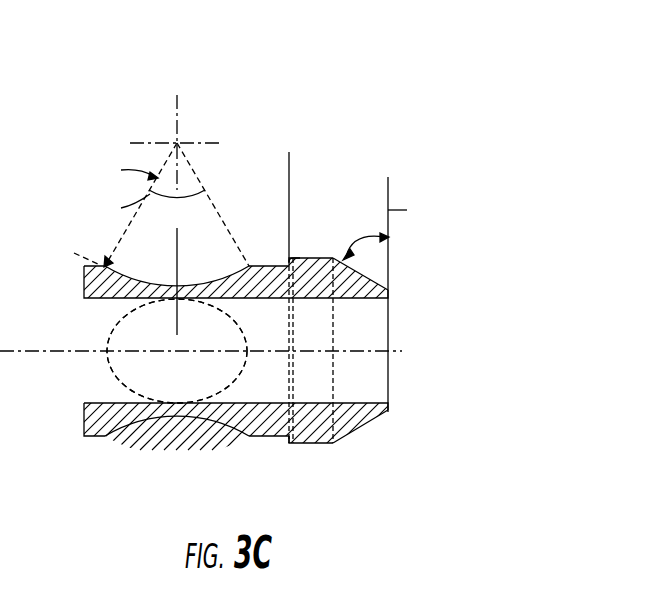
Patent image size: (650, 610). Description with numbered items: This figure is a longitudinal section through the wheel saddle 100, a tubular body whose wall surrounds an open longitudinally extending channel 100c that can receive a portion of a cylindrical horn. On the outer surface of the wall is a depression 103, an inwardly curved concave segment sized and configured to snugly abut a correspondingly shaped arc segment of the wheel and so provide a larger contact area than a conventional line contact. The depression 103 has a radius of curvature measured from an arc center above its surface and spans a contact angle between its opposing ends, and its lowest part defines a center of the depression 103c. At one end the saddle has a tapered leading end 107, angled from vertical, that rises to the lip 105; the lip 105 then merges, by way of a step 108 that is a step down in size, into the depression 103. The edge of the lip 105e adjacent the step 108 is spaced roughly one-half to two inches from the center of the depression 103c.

The wheel saddle 100 is at (121, 97).
The open longitudinally extending channel 100c is at (372, 325).
The depression 103 is at (205, 283).
The center of the depression 103c is at (177, 287).
The lip 105 is at (317, 258).
The edge of the lip 105e is at (291, 257).
The tapered leading end 107 is at (388, 277).
The step 108 is at (284, 450).